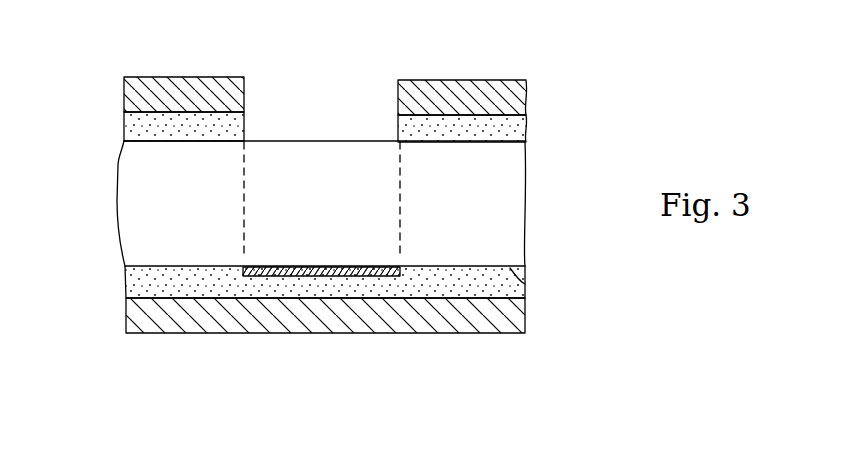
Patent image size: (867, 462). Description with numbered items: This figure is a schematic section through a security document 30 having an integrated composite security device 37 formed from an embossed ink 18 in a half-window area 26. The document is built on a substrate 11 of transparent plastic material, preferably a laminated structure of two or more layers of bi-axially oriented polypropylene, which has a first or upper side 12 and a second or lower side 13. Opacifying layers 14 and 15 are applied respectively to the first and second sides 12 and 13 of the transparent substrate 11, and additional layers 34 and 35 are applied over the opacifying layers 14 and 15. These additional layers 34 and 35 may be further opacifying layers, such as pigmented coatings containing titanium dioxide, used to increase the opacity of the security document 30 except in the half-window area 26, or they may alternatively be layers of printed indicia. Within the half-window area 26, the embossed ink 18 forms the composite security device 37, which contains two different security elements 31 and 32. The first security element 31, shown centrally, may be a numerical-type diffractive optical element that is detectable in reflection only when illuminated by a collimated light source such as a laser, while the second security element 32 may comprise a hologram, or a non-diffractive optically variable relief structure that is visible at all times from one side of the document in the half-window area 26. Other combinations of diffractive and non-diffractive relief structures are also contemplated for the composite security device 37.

The substrate 11 is at (181, 205).
The first or upper side 12 is at (522, 128).
The second or lower side 13 is at (530, 283).
The opacifying layer 14 is at (145, 132).
The opacifying layer 15 is at (140, 284).
The embossed ink 18 is at (243, 270).
The half-window area 26 is at (339, 111).
The security document 30 is at (545, 99).
The first security element 31 is at (318, 279).
The second security element 32 is at (367, 281).
The additional layer 34 is at (145, 104).
The additional layer 35 is at (140, 317).
The composite security device 37 is at (335, 288).